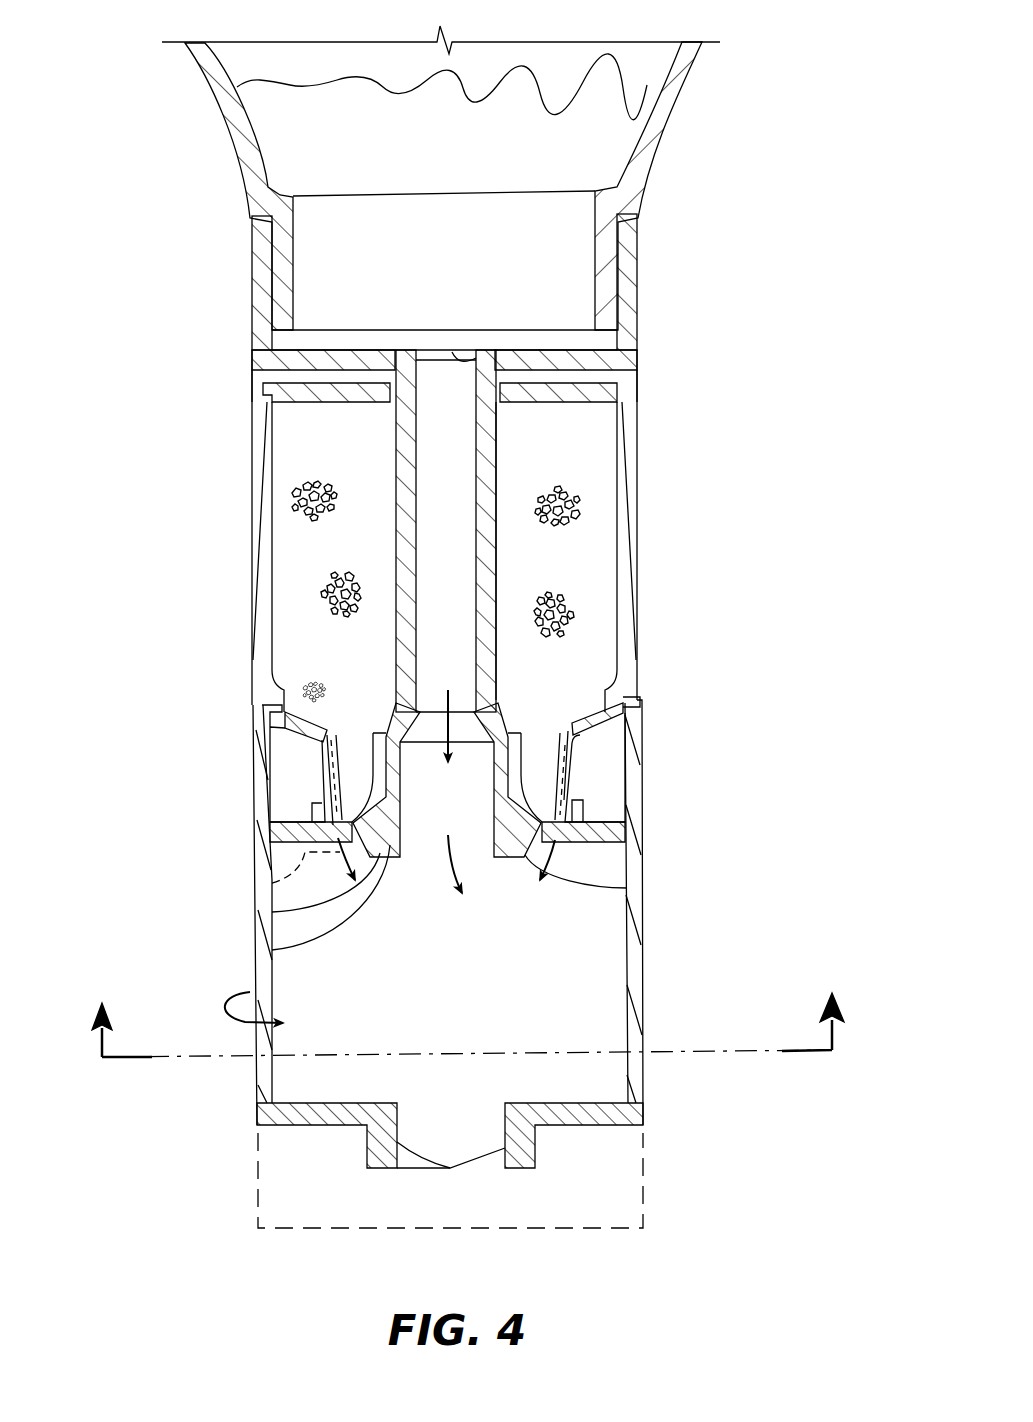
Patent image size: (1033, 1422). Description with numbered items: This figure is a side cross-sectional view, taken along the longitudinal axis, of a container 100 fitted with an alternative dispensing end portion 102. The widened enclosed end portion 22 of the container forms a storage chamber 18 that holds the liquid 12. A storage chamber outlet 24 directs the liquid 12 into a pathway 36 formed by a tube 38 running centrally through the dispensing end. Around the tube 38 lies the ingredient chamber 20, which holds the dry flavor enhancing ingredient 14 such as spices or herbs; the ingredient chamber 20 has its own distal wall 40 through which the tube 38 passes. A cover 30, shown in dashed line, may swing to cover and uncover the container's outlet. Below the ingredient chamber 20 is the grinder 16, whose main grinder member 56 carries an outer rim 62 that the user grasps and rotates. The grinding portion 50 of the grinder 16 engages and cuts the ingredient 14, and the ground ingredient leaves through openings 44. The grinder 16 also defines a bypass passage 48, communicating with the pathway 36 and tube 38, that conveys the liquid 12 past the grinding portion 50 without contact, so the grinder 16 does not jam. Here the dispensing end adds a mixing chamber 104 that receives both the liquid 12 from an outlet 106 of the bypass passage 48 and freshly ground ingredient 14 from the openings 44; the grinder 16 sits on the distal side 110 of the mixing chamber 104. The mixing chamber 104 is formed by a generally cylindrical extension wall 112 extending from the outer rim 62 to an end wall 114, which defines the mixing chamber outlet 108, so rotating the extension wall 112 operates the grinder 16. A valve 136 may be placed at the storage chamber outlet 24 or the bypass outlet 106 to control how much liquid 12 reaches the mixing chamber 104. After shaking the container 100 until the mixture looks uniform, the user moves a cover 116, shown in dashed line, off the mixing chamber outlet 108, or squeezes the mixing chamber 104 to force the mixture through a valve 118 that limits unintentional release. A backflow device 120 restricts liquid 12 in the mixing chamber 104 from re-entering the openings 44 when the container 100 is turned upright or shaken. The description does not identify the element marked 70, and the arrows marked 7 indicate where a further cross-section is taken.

The section line 7- 7 is at (468, 1009).
The liquid 12 is at (347, 100).
The flavor enhancing ingredient 14 is at (290, 482).
The grinder 16 is at (567, 770).
The storage chamber 18 is at (624, 145).
The ingredient chamber 20 is at (615, 462).
The enclosed end portion 22 is at (683, 63).
The storage chamber outlet 24 is at (423, 343).
The cover 30 is at (632, 265).
The pathway 36 is at (436, 553).
The tube 38 is at (487, 551).
The distal wall 40 is at (557, 403).
The openings 44 is at (272, 913).
The bypass passage 48 is at (436, 810).
The grinding portion 50 is at (352, 721).
The main grinder member 56 is at (635, 770).
The outer rim 62 is at (640, 718).
The side wall 70 is at (635, 602).
The container 100 is at (185, 108).
The dispensing end portion 102 is at (195, 1250).
The mixing chamber 104 is at (628, 978).
The outlet 106 is at (497, 852).
The mixing chamber outlet 108 is at (420, 1167).
The distal side 110 is at (272, 950).
The extension wall 112 is at (635, 947).
The end wall 114 is at (583, 1123).
The cover 116 is at (605, 1228).
The valve 118 is at (483, 1165).
The backflow device 120 is at (272, 883).
The valve 136 is at (457, 362).